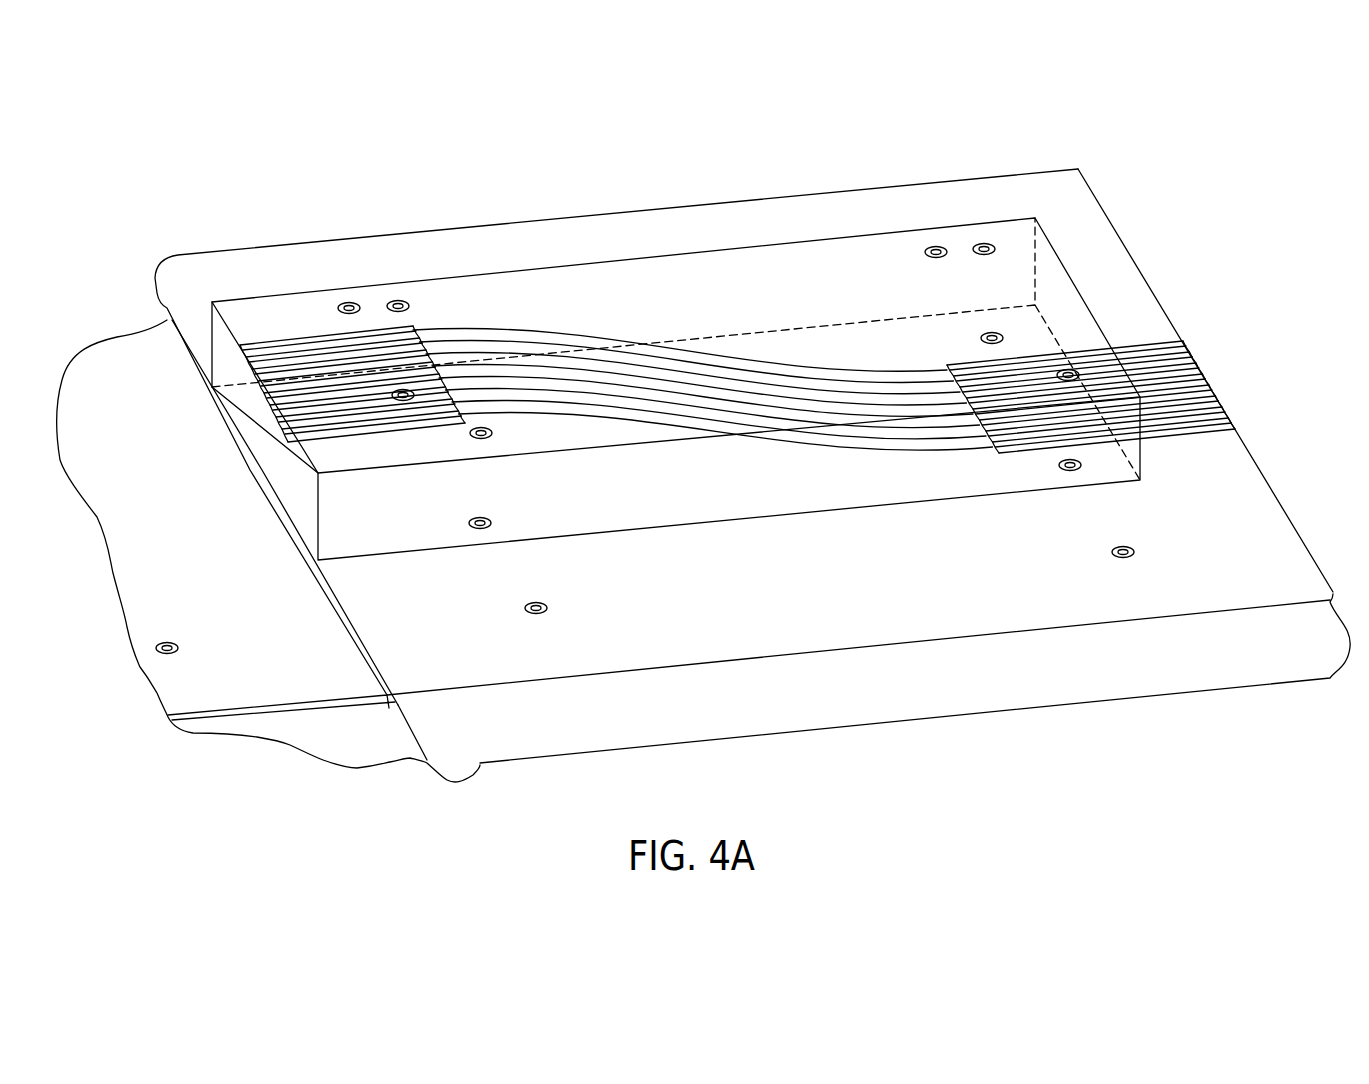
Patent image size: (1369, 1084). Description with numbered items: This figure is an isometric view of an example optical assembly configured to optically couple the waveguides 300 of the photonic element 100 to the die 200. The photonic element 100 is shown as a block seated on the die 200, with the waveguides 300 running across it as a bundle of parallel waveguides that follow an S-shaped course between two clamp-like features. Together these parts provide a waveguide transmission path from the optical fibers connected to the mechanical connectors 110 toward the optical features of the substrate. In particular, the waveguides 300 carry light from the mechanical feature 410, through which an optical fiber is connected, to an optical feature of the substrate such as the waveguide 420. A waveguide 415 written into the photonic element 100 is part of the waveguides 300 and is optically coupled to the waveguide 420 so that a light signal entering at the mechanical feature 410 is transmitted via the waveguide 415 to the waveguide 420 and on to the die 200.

The photonic element 100 is at (857, 237).
The mechanical connectors 110 is at (539, 414).
The die 200 is at (1262, 568).
The waveguides 300 is at (1117, 227).
The mechanical feature 410 is at (408, 423).
The waveguide 415 is at (708, 425).
The waveguide 420 is at (1157, 433).